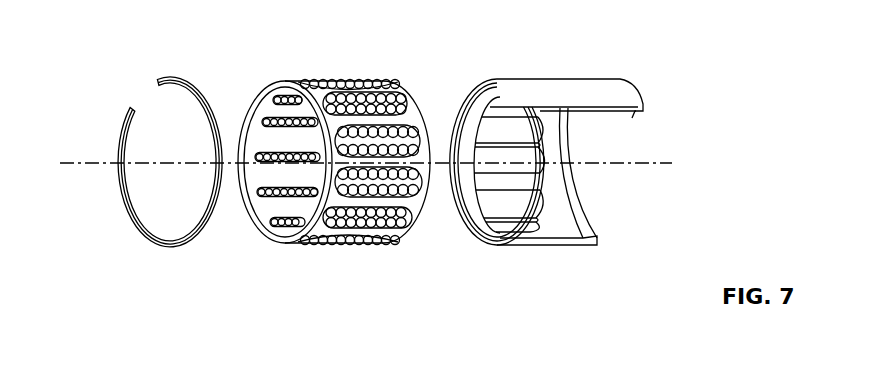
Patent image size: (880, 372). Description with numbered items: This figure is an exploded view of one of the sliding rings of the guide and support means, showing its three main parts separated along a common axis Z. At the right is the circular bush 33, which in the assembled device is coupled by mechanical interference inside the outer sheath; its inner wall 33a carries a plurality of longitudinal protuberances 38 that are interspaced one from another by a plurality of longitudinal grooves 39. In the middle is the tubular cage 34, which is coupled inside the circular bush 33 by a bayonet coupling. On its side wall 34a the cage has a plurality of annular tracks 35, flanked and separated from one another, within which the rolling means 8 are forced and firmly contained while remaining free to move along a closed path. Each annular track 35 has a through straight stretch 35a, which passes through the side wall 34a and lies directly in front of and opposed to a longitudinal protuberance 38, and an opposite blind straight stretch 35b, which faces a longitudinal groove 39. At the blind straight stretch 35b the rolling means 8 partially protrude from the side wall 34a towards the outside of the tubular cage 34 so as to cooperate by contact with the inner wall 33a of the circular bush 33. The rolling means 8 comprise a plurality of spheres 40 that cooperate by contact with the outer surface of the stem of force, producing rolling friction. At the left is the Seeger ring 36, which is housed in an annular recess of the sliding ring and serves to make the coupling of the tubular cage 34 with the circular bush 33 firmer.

The circular bush 33 is at (578, 86).
The inner wall 33a is at (549, 177).
The tubular cage 34 is at (266, 92).
The side wall 34a is at (415, 110).
The annular tracks 35 is at (368, 232).
The through straight stretch 35a is at (280, 203).
The blind straight stretch 35b is at (356, 220).
The Seeger ring 36 is at (120, 142).
The longitudinal protuberances 38 is at (508, 98).
The longitudinal grooves 39 is at (524, 117).
The spheres 40 is at (320, 79).
The rolling means 8 is at (375, 188).
The axis Z is at (103, 165).